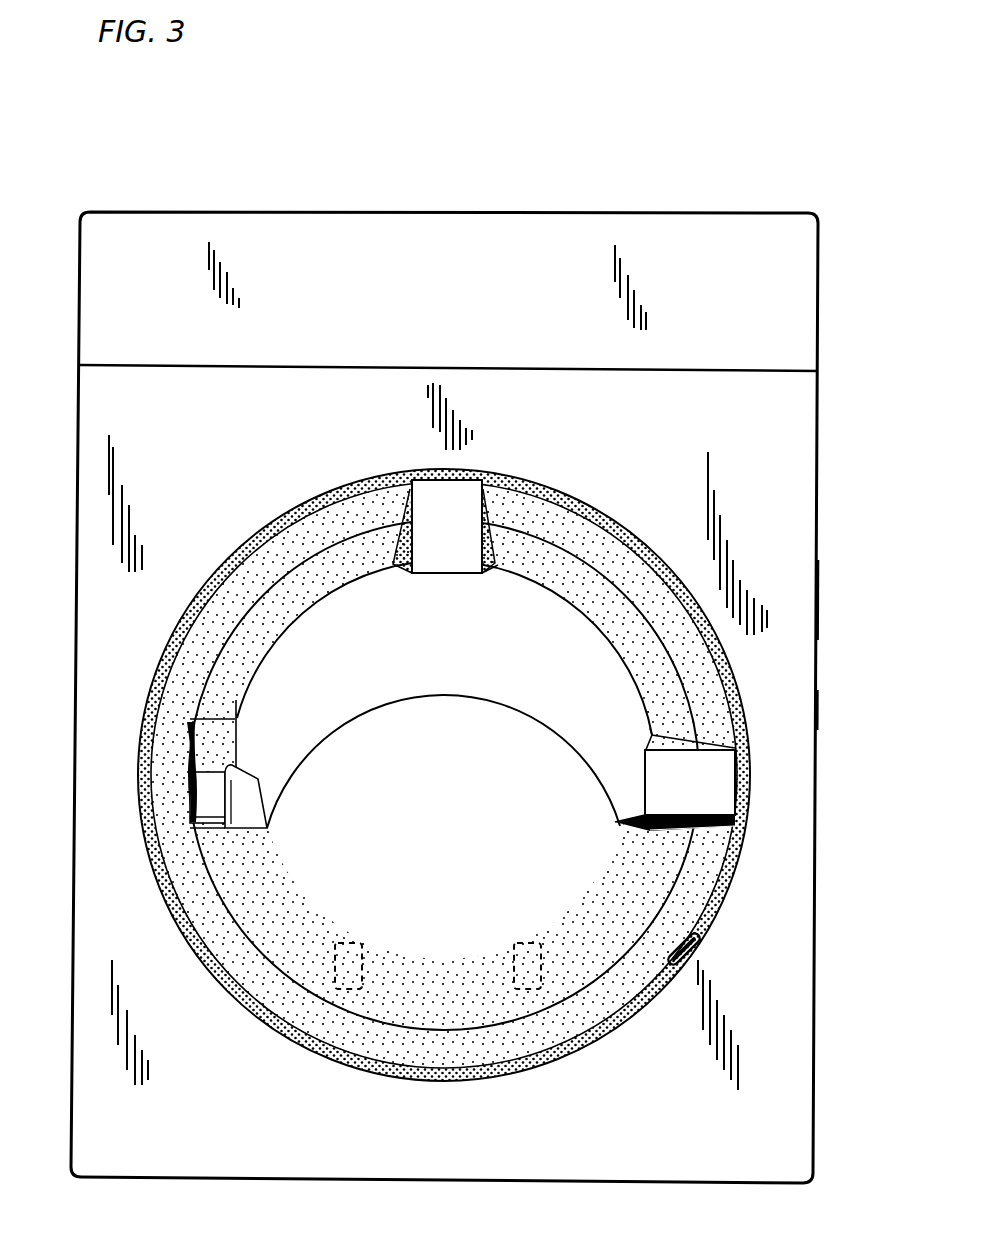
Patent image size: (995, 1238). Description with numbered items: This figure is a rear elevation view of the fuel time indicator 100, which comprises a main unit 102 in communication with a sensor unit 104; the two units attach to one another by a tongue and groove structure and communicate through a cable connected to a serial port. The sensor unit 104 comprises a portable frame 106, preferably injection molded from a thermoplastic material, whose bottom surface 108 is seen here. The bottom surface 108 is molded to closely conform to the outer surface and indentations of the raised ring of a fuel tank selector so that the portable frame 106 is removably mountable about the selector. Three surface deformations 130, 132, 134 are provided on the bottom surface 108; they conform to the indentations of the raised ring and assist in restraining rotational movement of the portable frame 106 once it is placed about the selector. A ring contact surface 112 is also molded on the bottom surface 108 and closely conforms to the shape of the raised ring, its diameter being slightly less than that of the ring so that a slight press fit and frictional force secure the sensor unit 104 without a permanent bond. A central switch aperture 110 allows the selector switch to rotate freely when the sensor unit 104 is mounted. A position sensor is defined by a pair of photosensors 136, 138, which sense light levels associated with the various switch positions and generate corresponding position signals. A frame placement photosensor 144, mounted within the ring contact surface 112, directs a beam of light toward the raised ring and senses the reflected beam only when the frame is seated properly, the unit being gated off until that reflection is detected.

The fuel time indicator 100 is at (580, 206).
The main unit 102 is at (818, 291).
The sensor unit 104 is at (818, 601).
The portable frame 106 is at (819, 712).
The bottom surface 108 is at (802, 480).
The switch aperture 110 is at (330, 892).
The ring contact surface 112 is at (248, 588).
The surface deformation 130 is at (185, 797).
The surface deformation 132 is at (433, 510).
The surface deformation 134 is at (677, 775).
The photosensor 136 is at (523, 940).
The photosensor 138 is at (357, 940).
The frame placement photosensor 144 is at (703, 940).